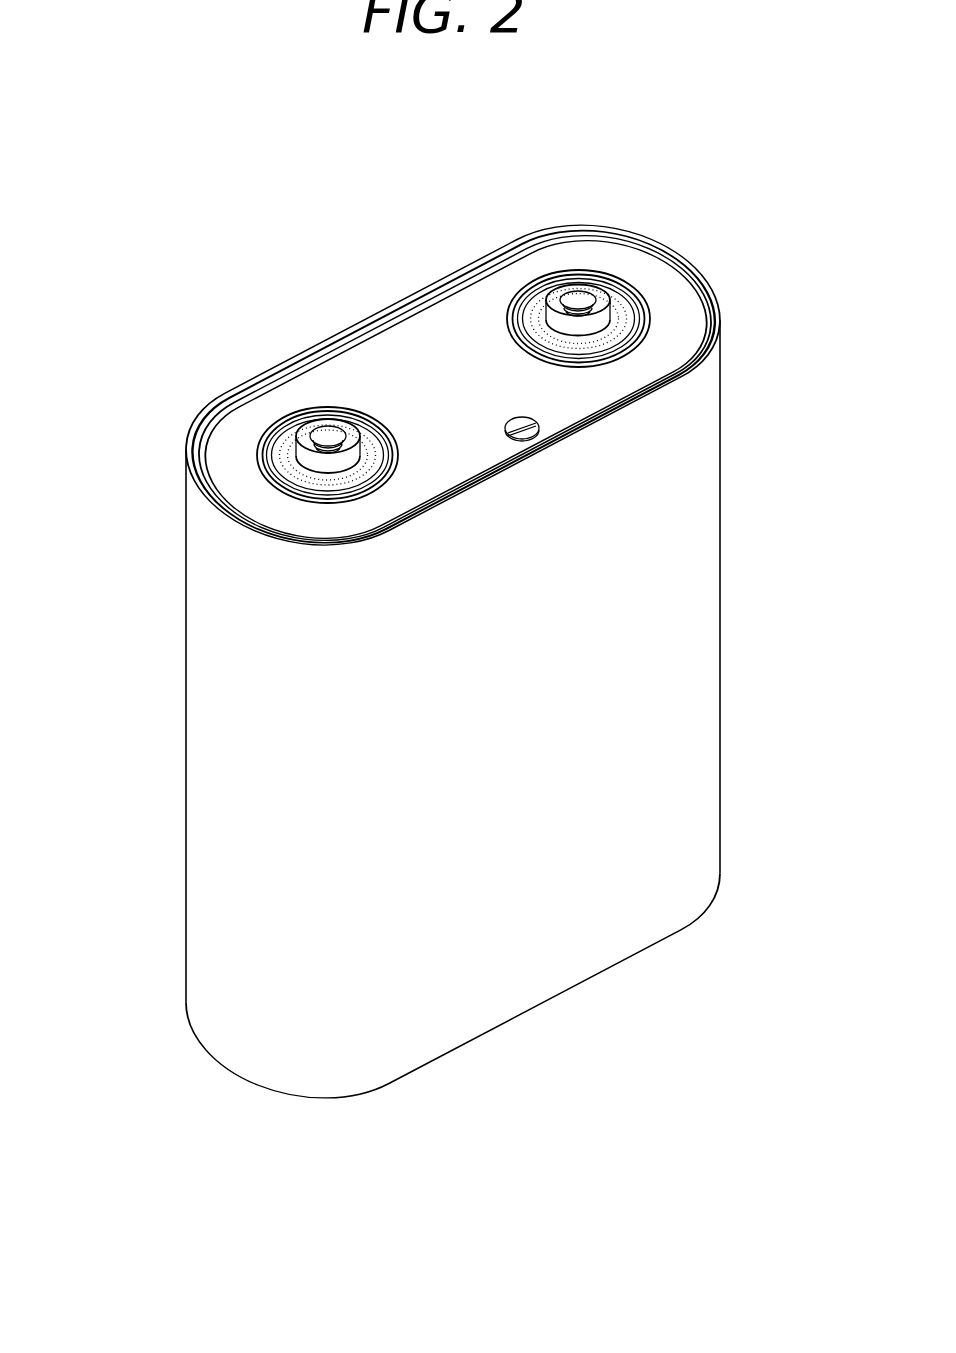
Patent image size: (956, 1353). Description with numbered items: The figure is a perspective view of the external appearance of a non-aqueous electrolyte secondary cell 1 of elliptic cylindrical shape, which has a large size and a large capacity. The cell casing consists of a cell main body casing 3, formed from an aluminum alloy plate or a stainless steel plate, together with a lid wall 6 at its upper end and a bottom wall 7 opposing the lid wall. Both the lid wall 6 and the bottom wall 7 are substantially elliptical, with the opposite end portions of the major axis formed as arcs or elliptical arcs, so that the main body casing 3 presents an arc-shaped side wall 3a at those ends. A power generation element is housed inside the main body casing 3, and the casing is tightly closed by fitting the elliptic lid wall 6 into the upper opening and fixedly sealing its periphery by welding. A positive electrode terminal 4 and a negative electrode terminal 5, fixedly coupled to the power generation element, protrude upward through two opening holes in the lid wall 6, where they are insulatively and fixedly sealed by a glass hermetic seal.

The non-aqueous electrolyte secondary cell 1 is at (462, 676).
The cell main body casing 3 is at (462, 661).
The arc-shaped side wall 3a is at (200, 643).
The positive electrode terminal 4 is at (297, 433).
The negative electrode terminal 5 is at (550, 290).
The lid wall 6 is at (407, 333).
The bottom wall 7 is at (533, 1010).